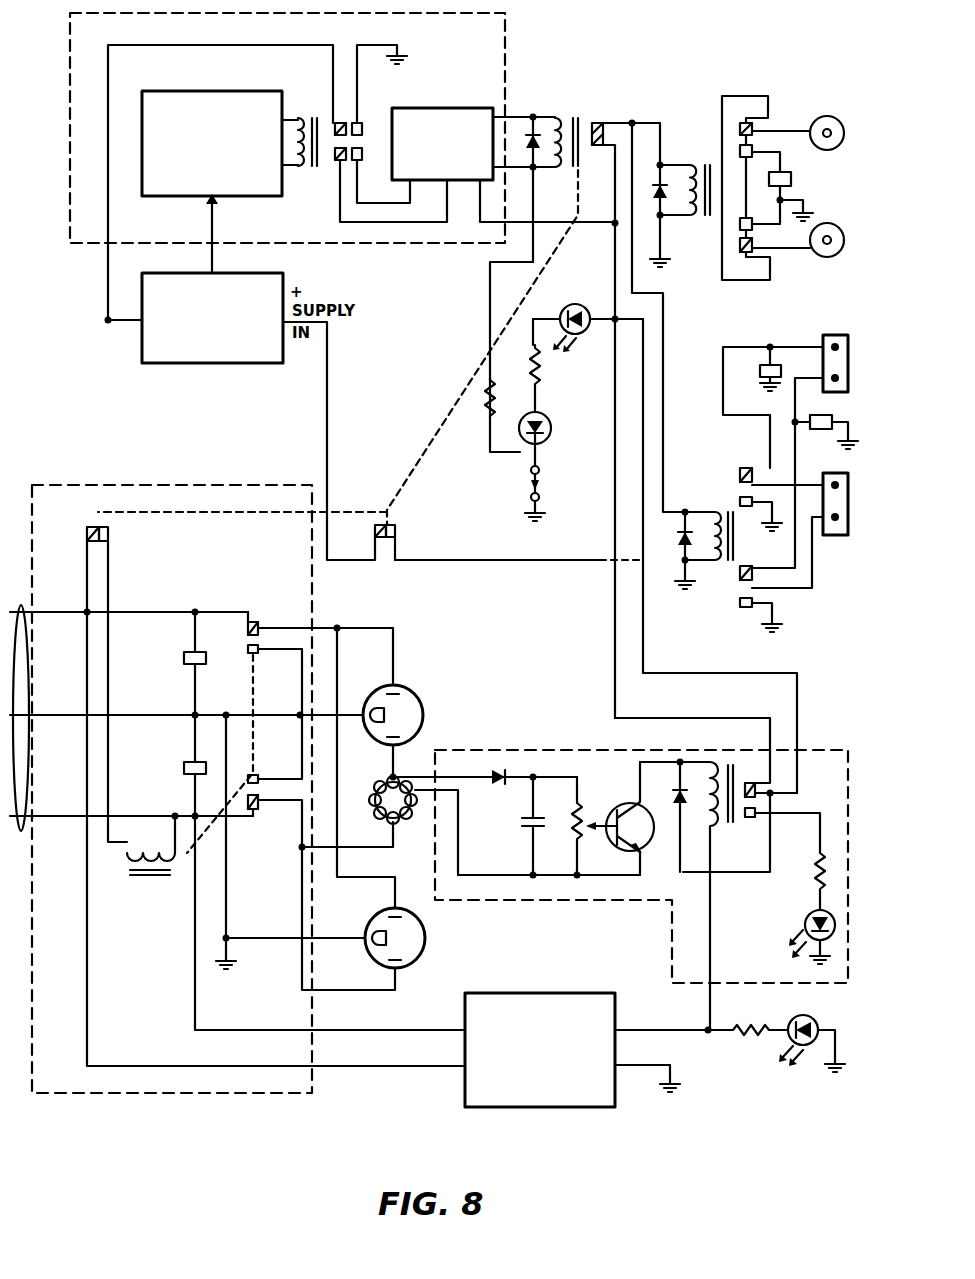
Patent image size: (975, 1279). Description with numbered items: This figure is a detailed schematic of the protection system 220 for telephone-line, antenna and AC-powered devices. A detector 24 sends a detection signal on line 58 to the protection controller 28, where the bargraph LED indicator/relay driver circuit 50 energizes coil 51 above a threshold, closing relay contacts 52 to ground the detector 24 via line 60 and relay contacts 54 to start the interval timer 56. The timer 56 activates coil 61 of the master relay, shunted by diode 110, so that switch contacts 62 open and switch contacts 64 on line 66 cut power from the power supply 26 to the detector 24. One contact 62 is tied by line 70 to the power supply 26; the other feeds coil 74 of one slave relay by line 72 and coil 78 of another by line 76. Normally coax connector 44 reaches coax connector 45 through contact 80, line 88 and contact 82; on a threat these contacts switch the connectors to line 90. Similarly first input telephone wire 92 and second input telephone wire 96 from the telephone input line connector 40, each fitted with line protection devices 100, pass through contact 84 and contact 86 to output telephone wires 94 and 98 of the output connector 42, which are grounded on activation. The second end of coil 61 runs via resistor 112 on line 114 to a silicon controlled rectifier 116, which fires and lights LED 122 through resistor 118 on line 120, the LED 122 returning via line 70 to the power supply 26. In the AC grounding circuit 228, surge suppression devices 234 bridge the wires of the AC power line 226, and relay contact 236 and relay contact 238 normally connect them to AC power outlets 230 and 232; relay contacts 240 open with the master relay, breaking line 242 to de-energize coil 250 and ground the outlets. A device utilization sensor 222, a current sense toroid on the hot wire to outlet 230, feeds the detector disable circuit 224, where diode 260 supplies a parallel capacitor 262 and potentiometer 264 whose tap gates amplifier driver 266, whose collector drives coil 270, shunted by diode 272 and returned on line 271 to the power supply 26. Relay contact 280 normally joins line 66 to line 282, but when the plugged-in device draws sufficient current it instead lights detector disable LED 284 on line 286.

The protection controller 28 is at (70, 42).
The line 60 is at (170, 47).
The bargraph LED indicator/relay driver circuit 50 is at (232, 91).
The coil 51 is at (296, 166).
The relay contacts 52 is at (348, 115).
The relay contacts 54 is at (345, 170).
The interval timer 56 is at (440, 108).
The line 58 is at (214, 222).
The diode 110 is at (536, 170).
The coil 61 is at (557, 115).
The protection system 220 is at (522, 54).
The switch contacts 62 is at (603, 118).
The line 76 is at (665, 332).
The line 72 is at (660, 120).
The coil 74 is at (693, 216).
The contact 80 is at (664, 182).
The line 88 is at (742, 96).
The line 90 is at (768, 222).
The contact 82 is at (755, 248).
The coax connector 44 is at (827, 116).
The coax connector 45 is at (828, 257).
The detector 24 is at (188, 363).
The line 114 is at (490, 287).
The line 120 is at (533, 333).
The LED 122 is at (588, 328).
The resistor 118 is at (545, 352).
The resistor 112 is at (490, 416).
The silicon controlled rectifier 116 is at (521, 422).
The line 70 is at (642, 372).
The telephone input line connector 40 is at (835, 335).
The first input telephone wire 92 is at (805, 335).
The line protection devices 100 is at (752, 358).
The second input telephone wire 96 is at (822, 418).
The contact 84 is at (740, 476).
The output telephone wire 94 is at (812, 485).
The output connector 42 is at (840, 535).
The coil 78 is at (718, 562).
The output telephone wire 98 is at (800, 590).
The contact 86 is at (738, 604).
The AC grounding circuit 228 is at (211, 485).
The AC power line 226 is at (30, 826).
The relay contacts 240 is at (90, 527).
The line 242 is at (90, 960).
The surge suppression devices 234 is at (185, 654).
The coil 250 is at (127, 866).
The relay contact 238 is at (260, 622).
The relay contact 236 is at (262, 812).
The AC power outlet 230 is at (414, 690).
The device utilization sensor 222 is at (412, 820).
The AC power outlet 232 is at (424, 956).
The switch contacts 64 is at (402, 532).
The line 66 is at (462, 560).
The detector disable circuit 224 is at (818, 750).
The diode 260 is at (507, 776).
The capacitor 262 is at (528, 832).
The potentiometer 264 is at (585, 845).
The amplifier driver 266 is at (625, 804).
The coil 270 is at (705, 764).
The diode 272 is at (677, 832).
The line 271 is at (712, 946).
The line 282 is at (740, 876).
The relay contact 280 is at (755, 780).
The line 286 is at (820, 848).
The detector disable LED 284 is at (810, 916).
The power supply 26 is at (598, 993).